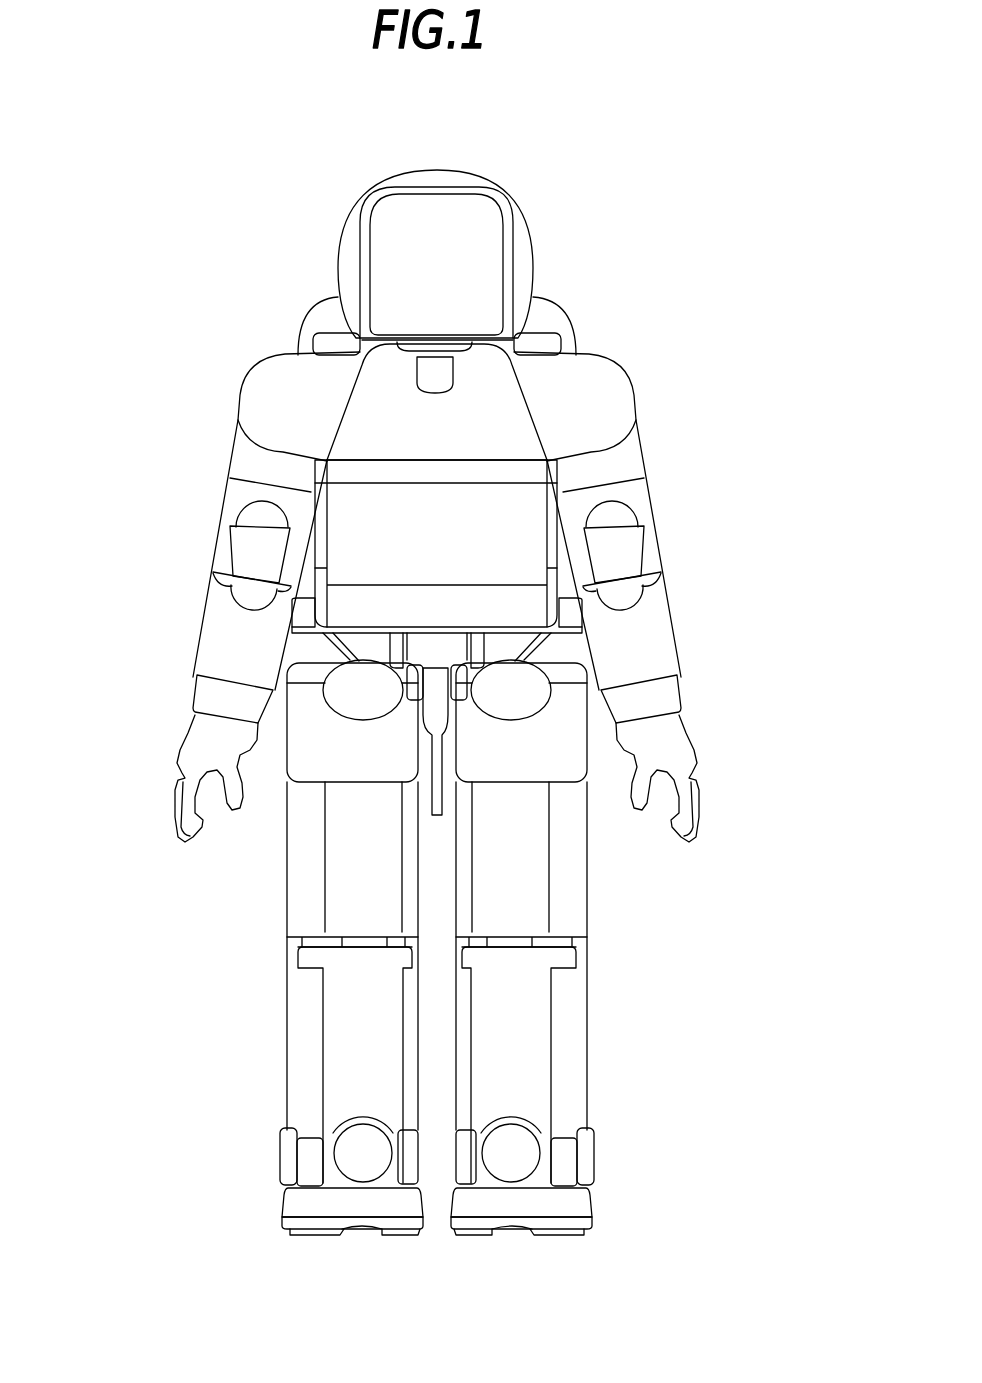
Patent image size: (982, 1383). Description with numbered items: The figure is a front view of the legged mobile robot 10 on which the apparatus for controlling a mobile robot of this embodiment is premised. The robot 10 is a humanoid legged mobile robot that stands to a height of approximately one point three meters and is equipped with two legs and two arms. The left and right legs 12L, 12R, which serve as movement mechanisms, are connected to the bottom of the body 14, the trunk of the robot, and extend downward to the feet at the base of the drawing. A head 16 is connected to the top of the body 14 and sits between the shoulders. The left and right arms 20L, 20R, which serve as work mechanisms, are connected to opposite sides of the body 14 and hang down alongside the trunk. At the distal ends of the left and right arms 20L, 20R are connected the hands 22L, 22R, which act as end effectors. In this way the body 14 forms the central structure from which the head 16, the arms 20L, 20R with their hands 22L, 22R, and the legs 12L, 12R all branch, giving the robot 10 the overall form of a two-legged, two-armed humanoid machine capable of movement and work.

The legged mobile robot 10 is at (588, 302).
The right leg 12R is at (242, 960).
The left leg 12L is at (622, 958).
The body 14 is at (525, 565).
The head 16 is at (483, 188).
The right arm 20R is at (203, 460).
The left arm 20L is at (670, 446).
The right hand 22R is at (207, 752).
The left hand 22L is at (676, 750).